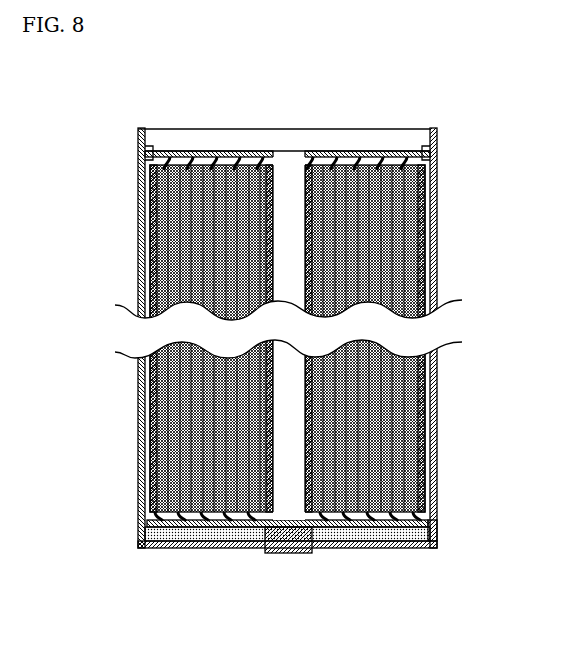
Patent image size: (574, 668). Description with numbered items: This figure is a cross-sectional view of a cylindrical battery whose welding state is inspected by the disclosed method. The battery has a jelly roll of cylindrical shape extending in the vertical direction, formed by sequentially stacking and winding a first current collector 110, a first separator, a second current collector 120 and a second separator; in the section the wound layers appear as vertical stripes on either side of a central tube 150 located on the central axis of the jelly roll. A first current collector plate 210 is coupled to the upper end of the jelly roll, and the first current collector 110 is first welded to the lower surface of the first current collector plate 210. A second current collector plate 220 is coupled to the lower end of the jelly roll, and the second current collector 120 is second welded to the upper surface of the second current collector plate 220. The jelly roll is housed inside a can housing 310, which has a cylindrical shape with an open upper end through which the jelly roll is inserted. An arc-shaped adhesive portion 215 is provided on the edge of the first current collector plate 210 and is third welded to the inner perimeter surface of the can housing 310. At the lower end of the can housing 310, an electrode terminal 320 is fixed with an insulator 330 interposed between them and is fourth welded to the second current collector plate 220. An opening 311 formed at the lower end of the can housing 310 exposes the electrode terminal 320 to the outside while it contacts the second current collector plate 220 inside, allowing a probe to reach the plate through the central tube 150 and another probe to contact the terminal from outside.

The first current collector 110 is at (437, 160).
The second current collector 120 is at (433, 527).
The central tube 150 is at (290, 165).
The first current collector plate 210 is at (204, 152).
The adhesive portion 215 is at (138, 152).
The second current collector plate 220 is at (173, 548).
The can housing 310 is at (438, 444).
The opening 311 is at (313, 550).
The electrode terminal 320 is at (277, 552).
The insulator 330 is at (400, 550).